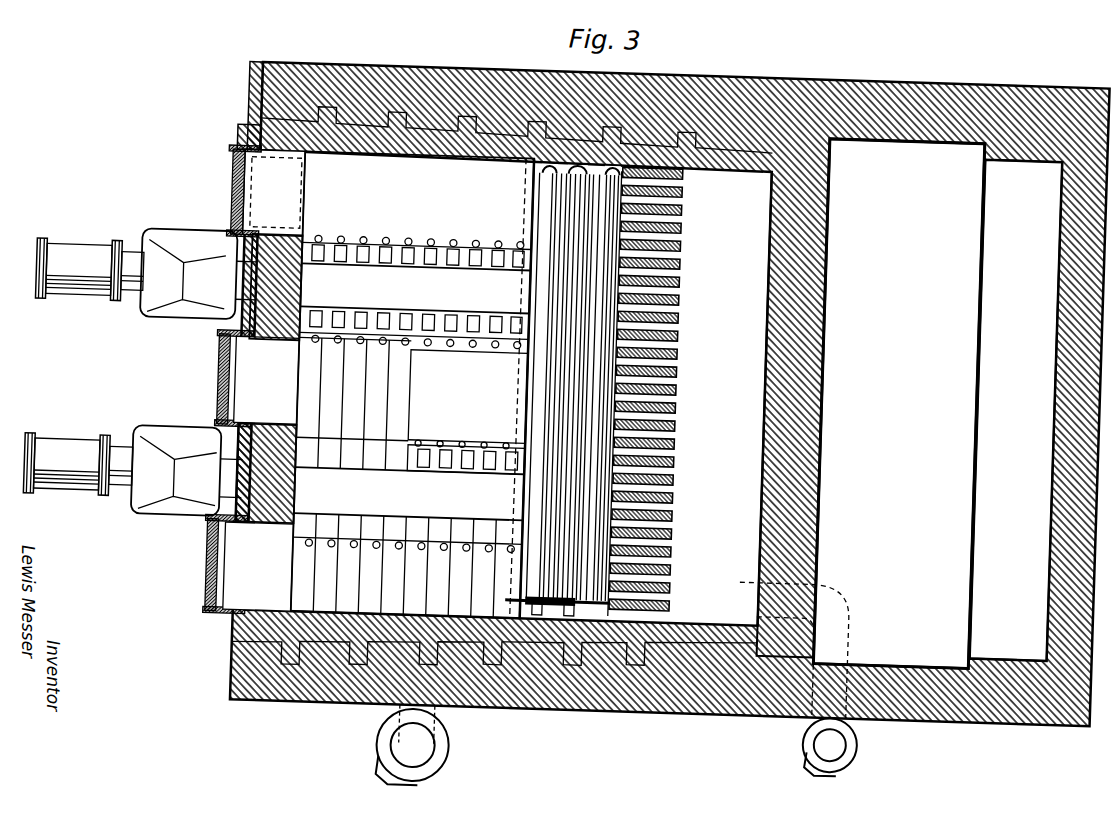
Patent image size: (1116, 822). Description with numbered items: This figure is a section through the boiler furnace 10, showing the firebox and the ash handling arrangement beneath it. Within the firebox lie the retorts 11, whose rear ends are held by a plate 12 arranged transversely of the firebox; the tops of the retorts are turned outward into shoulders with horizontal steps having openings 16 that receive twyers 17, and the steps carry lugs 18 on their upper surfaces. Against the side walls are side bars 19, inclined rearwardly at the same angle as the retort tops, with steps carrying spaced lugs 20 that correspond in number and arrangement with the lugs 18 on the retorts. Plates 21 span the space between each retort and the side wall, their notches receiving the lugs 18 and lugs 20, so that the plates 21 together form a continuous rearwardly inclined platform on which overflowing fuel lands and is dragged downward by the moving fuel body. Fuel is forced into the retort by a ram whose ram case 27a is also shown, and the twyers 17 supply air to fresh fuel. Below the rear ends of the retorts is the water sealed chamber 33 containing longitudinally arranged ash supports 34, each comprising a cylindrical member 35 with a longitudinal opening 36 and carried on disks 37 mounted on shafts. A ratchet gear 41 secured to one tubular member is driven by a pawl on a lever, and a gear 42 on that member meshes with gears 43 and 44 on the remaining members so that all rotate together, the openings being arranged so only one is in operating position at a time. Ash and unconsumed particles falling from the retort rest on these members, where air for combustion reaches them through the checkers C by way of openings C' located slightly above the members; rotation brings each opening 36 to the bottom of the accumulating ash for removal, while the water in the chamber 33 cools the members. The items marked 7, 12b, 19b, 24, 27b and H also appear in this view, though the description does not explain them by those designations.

The bolt 7 is at (379, 62).
The boiler furnace 10 is at (703, 64).
The retort 11 is at (412, 384).
The plate 12 is at (530, 180).
The section plane 12b is at (529, 150).
The opening 16 is at (522, 320).
The twyer 17 is at (395, 452).
The lug 18 is at (462, 236).
The side bar 19 is at (451, 610).
The chamber 19b is at (254, 380).
The lug 20 is at (424, 610).
The plate 21 is at (385, 393).
The fuel pipe 24 is at (88, 262).
The ram case 27a is at (235, 476).
The nozzle 27b is at (243, 282).
The water sealed chamber 33 is at (640, 300).
The ash support 34 is at (630, 346).
The cylindrical member 35 is at (590, 488).
The longitudinal opening 36 is at (600, 206).
The disk 37 is at (575, 390).
The ratchet gear 41 is at (640, 590).
The gear 42 is at (545, 592).
The gear 43 is at (560, 578).
The gear 44 is at (660, 612).
The checkers C is at (710, 443).
The opening C' is at (682, 493).
The burner housing H is at (205, 240).